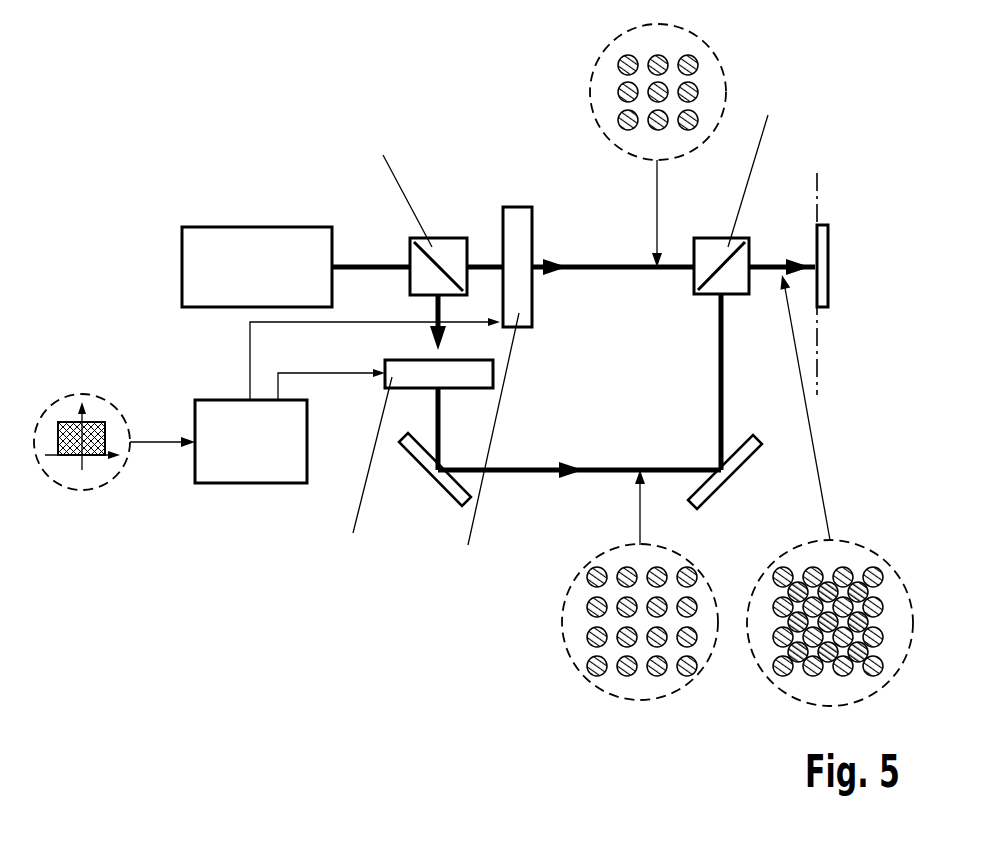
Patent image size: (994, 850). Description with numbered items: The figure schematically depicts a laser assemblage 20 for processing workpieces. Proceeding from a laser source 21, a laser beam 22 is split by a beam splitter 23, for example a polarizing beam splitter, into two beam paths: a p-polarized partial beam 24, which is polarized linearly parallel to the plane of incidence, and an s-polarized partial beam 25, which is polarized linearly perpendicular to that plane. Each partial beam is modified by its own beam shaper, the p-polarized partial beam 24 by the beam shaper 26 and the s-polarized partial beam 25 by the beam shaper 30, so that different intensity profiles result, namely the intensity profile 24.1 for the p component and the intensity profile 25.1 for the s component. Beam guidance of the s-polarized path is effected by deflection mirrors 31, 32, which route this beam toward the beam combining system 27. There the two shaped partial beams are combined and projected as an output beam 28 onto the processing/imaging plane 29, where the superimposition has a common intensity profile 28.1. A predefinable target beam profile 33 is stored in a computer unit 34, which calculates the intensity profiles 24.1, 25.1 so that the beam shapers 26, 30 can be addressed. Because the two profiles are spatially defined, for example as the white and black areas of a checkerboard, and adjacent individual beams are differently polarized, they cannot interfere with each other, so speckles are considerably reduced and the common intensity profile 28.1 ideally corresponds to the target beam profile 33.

The laser assemblage 20 is at (850, 138).
The laser source 21 is at (212, 227).
The laser beam 22 is at (366, 258).
The beam splitter 23 is at (437, 238).
The p-polarized partial beam 24 is at (580, 258).
The intensity profile I(p) 24.1 is at (600, 60).
The s-polarized partial beam 25 is at (507, 474).
The intensity profile I(s) 25.1 is at (563, 630).
The beam shaper 26 is at (518, 207).
The beam combining system 27 is at (720, 238).
The output beam 28 is at (762, 258).
The common intensity profile I(a) 28.1 is at (862, 548).
The processing/imaging plane 29 is at (818, 315).
The beam shaper 30 is at (497, 372).
The deflection mirror 31 is at (430, 474).
The deflection mirror 32 is at (735, 470).
The target beam profile I0 33 is at (107, 398).
The computer unit 34 is at (209, 400).